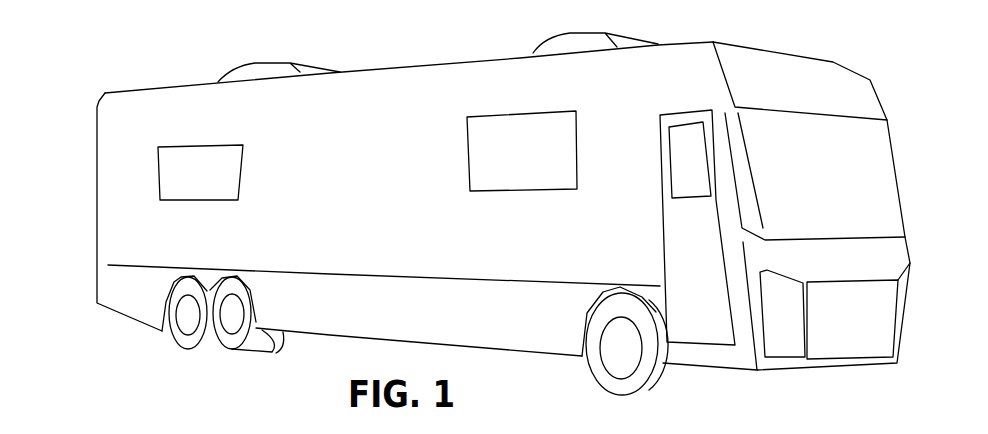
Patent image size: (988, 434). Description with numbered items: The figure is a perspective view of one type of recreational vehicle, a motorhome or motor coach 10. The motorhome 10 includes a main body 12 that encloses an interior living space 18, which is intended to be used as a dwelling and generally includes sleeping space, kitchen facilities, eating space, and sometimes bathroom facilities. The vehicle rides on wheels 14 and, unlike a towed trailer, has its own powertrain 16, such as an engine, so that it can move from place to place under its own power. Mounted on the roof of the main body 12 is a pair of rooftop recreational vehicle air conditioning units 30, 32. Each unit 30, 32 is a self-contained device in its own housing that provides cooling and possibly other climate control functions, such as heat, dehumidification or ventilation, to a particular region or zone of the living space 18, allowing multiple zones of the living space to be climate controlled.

The motorhome 10 is at (83, 115).
The main body 12 is at (110, 233).
The wheels 14 is at (182, 337).
The powertrain 16 is at (838, 318).
The interior living space 18 is at (384, 144).
The rooftop recreational vehicle air conditioning unit 30 is at (635, 40).
The rooftop recreational vehicle air conditioning unit 32 is at (255, 62).